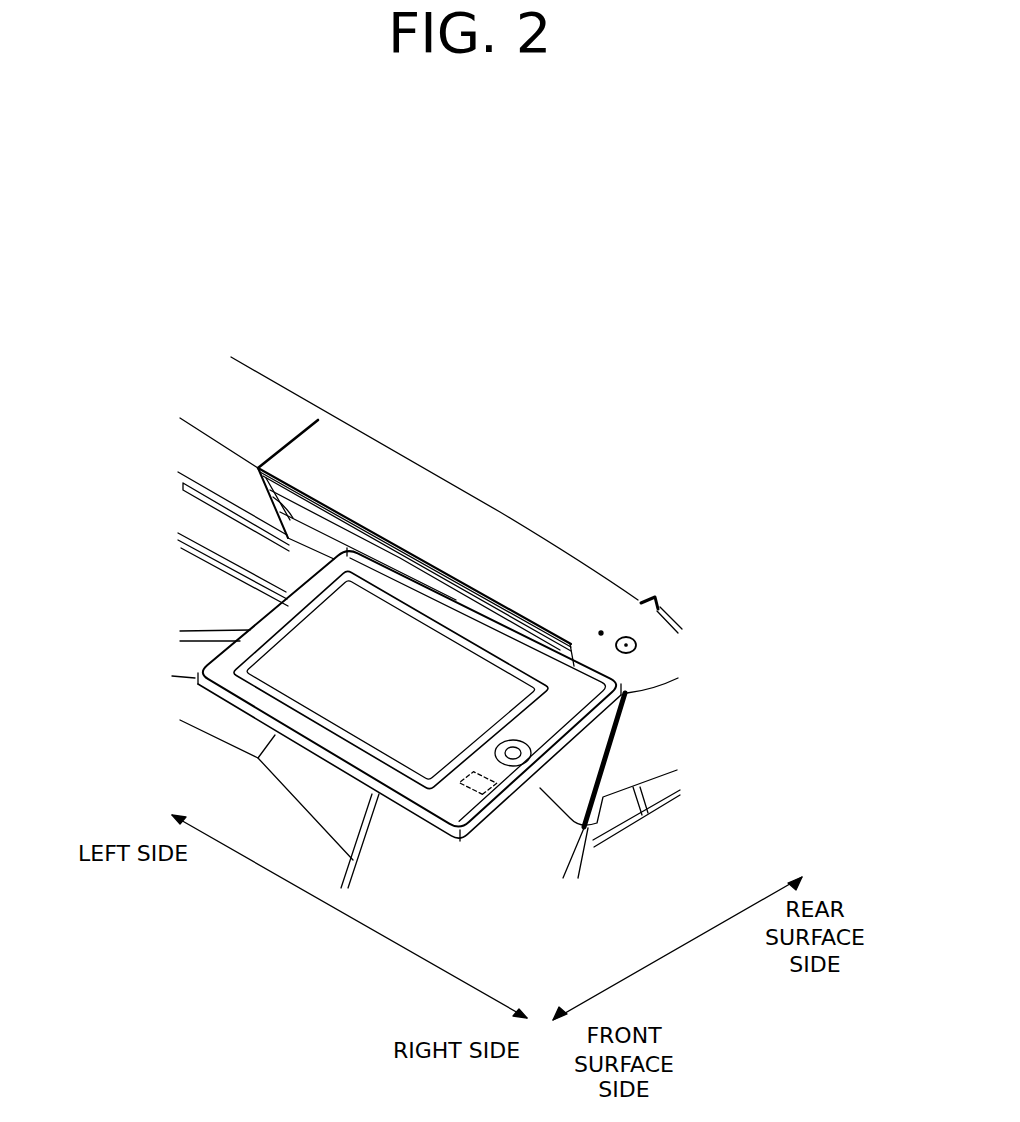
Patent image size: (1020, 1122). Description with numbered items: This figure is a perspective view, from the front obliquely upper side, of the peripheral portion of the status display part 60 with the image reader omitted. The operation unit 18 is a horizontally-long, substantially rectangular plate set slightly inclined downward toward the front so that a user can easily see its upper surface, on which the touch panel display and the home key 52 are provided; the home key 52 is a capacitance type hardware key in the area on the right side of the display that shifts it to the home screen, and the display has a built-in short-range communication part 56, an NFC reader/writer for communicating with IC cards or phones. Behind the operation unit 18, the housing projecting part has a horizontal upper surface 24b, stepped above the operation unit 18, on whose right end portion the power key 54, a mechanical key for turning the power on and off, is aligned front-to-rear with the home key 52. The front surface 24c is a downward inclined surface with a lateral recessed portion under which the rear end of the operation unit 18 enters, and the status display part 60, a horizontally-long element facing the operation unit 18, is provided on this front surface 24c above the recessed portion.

The operation unit 18 is at (462, 803).
The upper surface 24b is at (387, 472).
The front surface 24c is at (248, 493).
The home key 52 is at (531, 755).
The power key 54 is at (621, 637).
The short-range communication part 56 is at (493, 803).
The status display part 60 is at (403, 553).